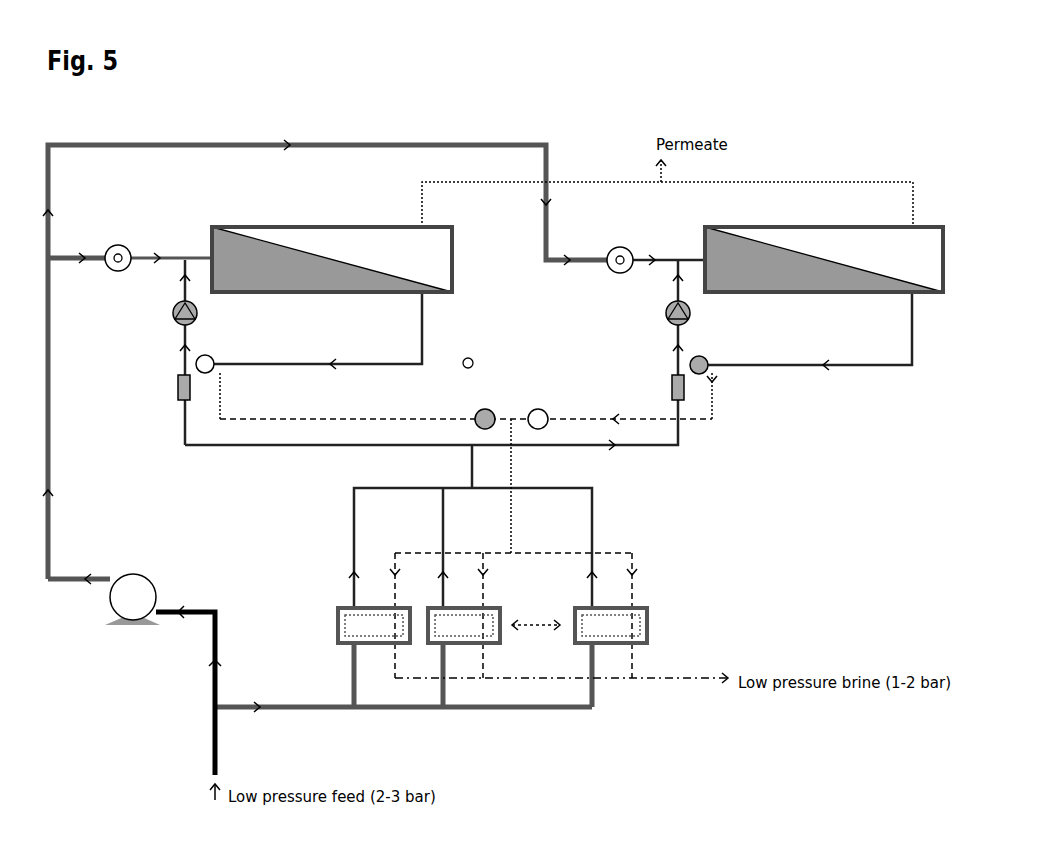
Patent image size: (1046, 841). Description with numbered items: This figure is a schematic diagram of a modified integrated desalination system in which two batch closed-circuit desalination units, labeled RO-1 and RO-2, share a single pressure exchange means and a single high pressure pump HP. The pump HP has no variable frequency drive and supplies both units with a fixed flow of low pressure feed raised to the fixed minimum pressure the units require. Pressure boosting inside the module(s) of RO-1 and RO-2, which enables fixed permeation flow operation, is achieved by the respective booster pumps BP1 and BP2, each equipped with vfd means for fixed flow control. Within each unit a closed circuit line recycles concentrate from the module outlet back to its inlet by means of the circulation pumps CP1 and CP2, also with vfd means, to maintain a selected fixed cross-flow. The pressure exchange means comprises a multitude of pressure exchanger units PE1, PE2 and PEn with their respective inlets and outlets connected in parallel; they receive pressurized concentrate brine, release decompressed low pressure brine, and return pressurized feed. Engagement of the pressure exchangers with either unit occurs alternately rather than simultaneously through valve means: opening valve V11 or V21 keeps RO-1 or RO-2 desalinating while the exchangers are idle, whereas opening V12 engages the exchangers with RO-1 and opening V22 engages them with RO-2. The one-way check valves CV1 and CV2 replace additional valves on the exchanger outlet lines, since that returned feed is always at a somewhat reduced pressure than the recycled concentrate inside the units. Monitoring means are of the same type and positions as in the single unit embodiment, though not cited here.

The booster pump BP1 is at (118, 268).
The batch CCD unit RO-1 is at (332, 249).
The circulation pump CP1 is at (206, 313).
The valve means V11 is at (209, 356).
The one-way check valve means CV1 is at (167, 387).
The valve means V12 is at (483, 412).
The valve means V22 is at (536, 412).
The valve means V21 is at (702, 357).
The one-way check valve means CV2 is at (663, 387).
The circulation pump CP2 is at (699, 313).
The booster pump BP2 is at (621, 269).
The batch CCD unit RO-2 is at (824, 249).
The high pressure pump HP is at (133, 609).
The pressure exchanger unit PE1 is at (374, 625).
The pressure exchanger unit PE2 is at (464, 625).
The pressure exchanger unit PEn is at (611, 625).